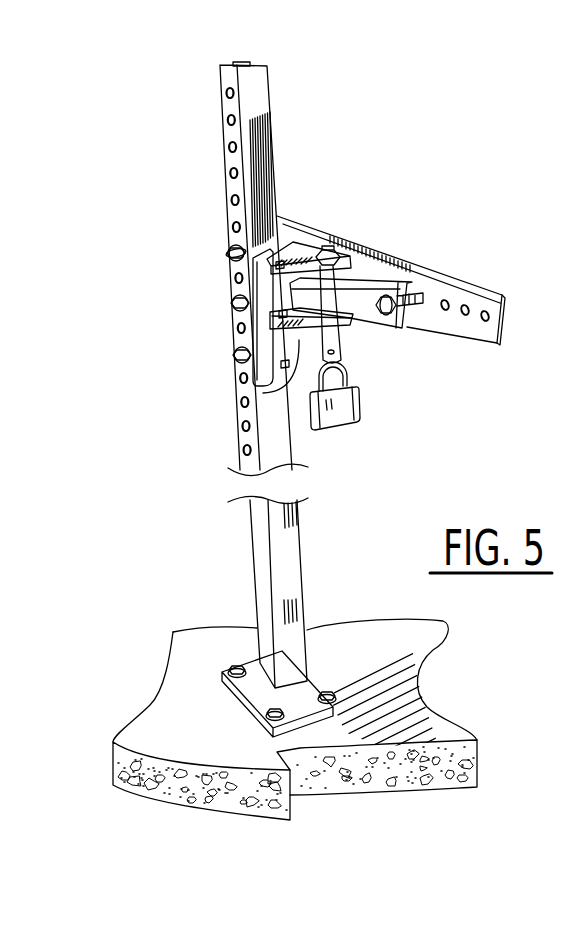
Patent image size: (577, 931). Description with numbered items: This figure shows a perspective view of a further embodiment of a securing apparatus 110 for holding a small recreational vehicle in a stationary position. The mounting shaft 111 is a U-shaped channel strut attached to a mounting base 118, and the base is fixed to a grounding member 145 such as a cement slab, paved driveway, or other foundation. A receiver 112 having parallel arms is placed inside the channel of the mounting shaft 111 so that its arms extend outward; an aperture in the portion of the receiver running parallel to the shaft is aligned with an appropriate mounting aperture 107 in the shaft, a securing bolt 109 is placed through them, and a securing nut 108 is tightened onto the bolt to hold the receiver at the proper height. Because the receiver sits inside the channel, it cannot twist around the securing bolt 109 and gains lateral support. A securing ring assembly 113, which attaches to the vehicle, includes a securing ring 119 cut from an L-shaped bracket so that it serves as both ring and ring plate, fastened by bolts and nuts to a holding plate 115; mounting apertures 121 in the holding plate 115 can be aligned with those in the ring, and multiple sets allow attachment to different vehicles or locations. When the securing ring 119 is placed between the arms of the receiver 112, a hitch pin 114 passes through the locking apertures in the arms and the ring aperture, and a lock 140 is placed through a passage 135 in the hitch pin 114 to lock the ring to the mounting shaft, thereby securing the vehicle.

The mounting aperture 107 is at (226, 93).
The securing nut 108 is at (230, 262).
The securing bolt 109 is at (232, 306).
The securing apparatus 110 is at (303, 198).
The mounting shaft 111 is at (273, 114).
The receiver 112 is at (256, 389).
The securing ring assembly 113 is at (339, 243).
The hitch pin 114 is at (300, 333).
The holding plate 115 is at (442, 272).
The mounting base 118 is at (318, 706).
The securing ring 119 is at (413, 318).
The mounting apertures 121 is at (408, 276).
The passage 135 is at (353, 364).
The lock 140 is at (346, 412).
The grounding member 145 is at (450, 737).